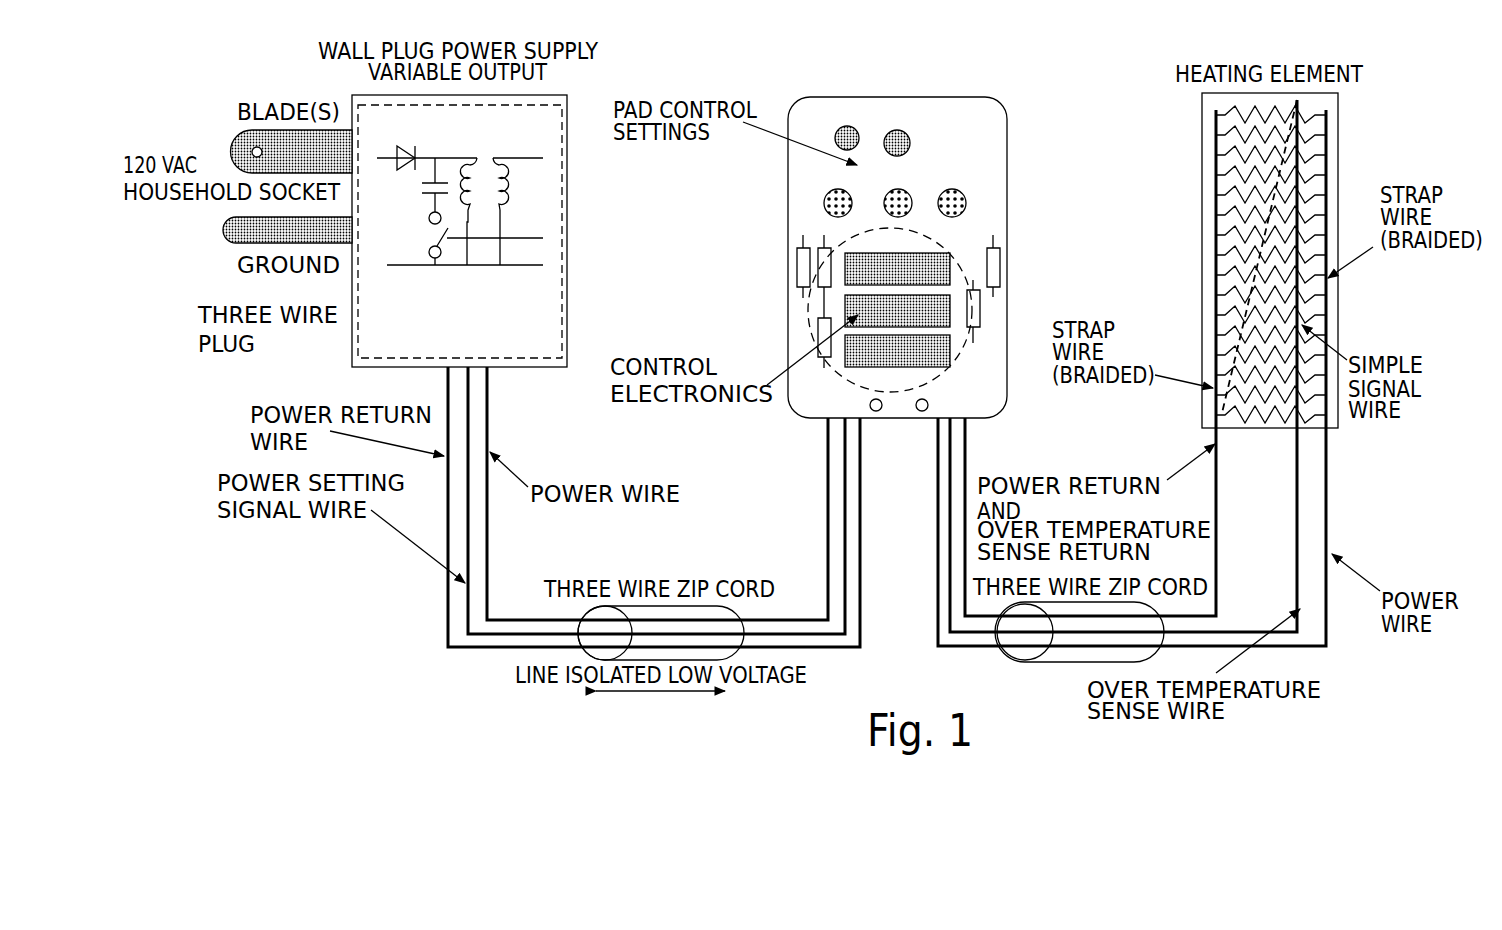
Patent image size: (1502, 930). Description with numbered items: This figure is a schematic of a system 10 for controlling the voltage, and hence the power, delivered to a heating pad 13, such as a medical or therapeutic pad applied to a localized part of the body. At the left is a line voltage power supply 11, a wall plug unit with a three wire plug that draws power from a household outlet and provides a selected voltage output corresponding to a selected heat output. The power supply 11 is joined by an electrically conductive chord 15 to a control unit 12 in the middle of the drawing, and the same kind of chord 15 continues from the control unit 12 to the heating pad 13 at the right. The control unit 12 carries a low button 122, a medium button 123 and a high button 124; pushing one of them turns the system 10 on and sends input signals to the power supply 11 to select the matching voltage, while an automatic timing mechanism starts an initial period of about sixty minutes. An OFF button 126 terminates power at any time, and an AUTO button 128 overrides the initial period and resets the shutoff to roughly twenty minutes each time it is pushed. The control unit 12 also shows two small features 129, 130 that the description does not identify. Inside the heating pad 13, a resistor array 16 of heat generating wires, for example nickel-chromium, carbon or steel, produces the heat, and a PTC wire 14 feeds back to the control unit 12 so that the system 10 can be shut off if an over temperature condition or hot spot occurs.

The system 10 is at (355, 641).
The line voltage power supply 11 is at (567, 203).
The control unit 12 is at (892, 234).
The heating pad 13 is at (1253, 260).
The Positive Temperature Co-Efficient (PTC) wire 14 is at (1248, 257).
The electrically conductive chord 15 is at (966, 451).
The resistor array 16 is at (1247, 333).
The low heat button 122 is at (824, 205).
The medium heat button 123 is at (908, 196).
The high heat button 124 is at (967, 205).
The OFF button 126 is at (910, 140).
The AUTO button 128 is at (835, 138).
The indicator light 129 is at (870, 405).
The indicator light 130 is at (928, 405).